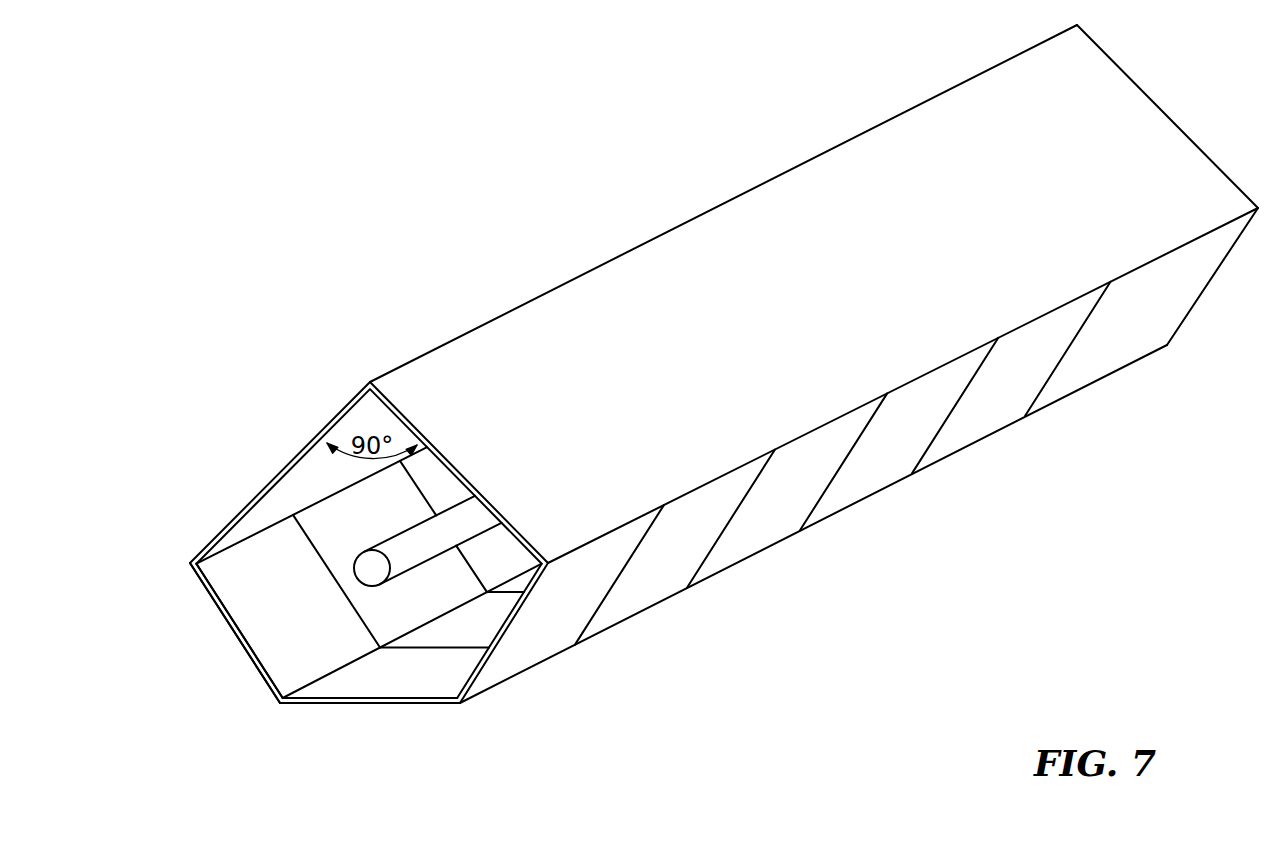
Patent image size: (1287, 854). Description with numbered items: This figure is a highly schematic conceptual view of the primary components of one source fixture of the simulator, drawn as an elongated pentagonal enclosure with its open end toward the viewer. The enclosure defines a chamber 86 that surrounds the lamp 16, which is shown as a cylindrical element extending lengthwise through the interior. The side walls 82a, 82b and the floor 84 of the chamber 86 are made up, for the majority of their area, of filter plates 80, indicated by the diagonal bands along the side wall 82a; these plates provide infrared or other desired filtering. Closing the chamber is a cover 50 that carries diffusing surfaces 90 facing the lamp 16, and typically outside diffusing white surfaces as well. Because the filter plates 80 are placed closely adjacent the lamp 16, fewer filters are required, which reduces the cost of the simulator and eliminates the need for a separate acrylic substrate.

The cover 50 is at (727, 250).
The chamber 86 is at (1168, 113).
The side wall 82a is at (644, 648).
The side wall 82b is at (229, 625).
The floor 84 is at (342, 705).
The filter plates 80 is at (835, 500).
The diffusing surfaces 90 is at (440, 456).
The lamp 16 is at (363, 571).